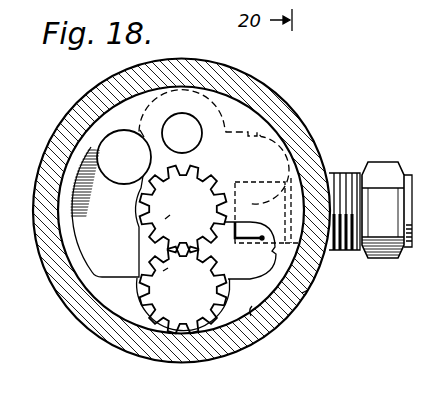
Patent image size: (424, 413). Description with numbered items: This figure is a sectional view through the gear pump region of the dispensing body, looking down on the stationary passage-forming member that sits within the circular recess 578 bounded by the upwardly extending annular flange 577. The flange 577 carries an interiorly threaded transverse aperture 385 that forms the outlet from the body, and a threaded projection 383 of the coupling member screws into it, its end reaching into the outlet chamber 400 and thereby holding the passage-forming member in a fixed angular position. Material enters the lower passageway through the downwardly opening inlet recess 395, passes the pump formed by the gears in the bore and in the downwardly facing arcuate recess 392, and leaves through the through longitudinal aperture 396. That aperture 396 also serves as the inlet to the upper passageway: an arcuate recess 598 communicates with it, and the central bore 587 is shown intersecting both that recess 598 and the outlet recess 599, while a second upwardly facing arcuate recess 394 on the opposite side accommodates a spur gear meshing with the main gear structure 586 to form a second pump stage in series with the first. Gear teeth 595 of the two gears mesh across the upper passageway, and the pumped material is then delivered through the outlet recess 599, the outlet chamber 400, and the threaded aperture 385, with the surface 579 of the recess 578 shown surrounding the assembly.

The arcuate recess 392 is at (205, 92).
The through longitudinal aperture 396 is at (99, 146).
The inlet recess 395 is at (285, 133).
The transverse aperture 385 is at (308, 180).
The threaded projection 383 is at (347, 173).
The drive gear 587 is at (187, 170).
The gear teeth 586 is at (165, 219).
The meshing teeth 595 is at (163, 271).
The outlet chamber 400 is at (261, 240).
The recess 598 is at (83, 235).
The housing inner wall 578 is at (105, 302).
The arcuate recess 394 is at (175, 327).
The chamber wall 599 is at (281, 262).
The housing wall 577 is at (308, 290).
The inner surface 579 is at (252, 307).